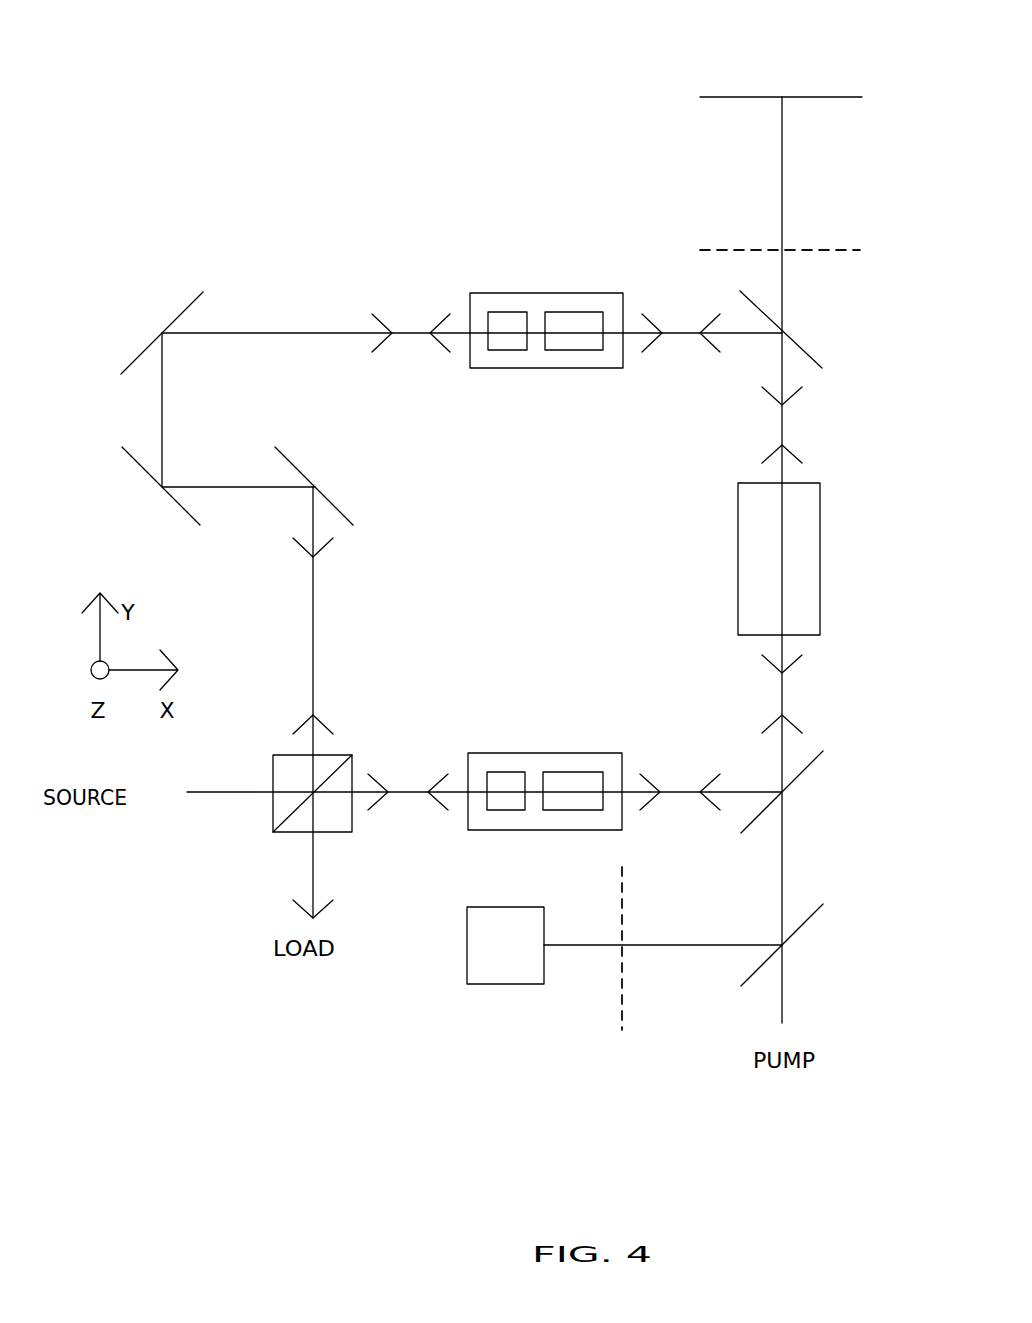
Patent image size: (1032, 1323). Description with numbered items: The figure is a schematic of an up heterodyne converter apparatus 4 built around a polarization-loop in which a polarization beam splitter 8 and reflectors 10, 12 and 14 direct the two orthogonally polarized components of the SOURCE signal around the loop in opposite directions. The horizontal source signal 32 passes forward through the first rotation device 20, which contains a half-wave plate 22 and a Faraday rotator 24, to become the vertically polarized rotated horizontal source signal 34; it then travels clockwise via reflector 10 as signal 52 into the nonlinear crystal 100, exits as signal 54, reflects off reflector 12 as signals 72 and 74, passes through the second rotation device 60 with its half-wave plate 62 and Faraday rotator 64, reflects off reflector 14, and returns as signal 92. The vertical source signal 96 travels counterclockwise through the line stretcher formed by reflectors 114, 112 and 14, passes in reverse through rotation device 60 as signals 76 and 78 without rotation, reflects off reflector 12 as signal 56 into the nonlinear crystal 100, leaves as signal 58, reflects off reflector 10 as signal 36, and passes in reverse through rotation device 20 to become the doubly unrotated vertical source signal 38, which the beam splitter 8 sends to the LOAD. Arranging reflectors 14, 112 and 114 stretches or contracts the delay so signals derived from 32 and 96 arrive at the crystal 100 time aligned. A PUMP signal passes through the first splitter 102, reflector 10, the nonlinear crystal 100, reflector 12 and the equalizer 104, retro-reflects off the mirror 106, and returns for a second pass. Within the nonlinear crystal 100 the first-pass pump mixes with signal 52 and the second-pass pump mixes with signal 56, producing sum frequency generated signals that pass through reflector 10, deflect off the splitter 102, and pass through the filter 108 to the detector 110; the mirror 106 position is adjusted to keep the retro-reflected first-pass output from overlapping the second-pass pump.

The up heterodyne converter apparatus 4 is at (162, 198).
The polarization beam splitter 8 is at (312, 809).
The reflector 10 is at (794, 792).
The reflector 12 is at (794, 329).
The reflector 14 is at (162, 329).
The first rotation device 20 is at (478, 753).
The half-wave plate 22 is at (508, 772).
The Faraday rotator 24 is at (565, 772).
The horizontal source signal 32 is at (373, 809).
The rotated horizontal source signal 34 is at (646, 809).
The unrotated vertical source signal 36 is at (705, 809).
The doubly unrotated vertical source signal 38 is at (433, 809).
The vertically-polarized signal 52 is at (800, 725).
The vertically-polarized signal 54 is at (801, 455).
The vertically-polarized signal 56 is at (801, 397).
The vertically-polarized signal 58 is at (800, 665).
The rotation device 60 is at (478, 368).
The half-wave plate 62 is at (508, 350).
The Faraday rotator 64 is at (562, 350).
The vertically-polarized signal 72 is at (705, 316).
The vertically-polarized signal 74 is at (434, 317).
The vertically-polarized signal 76 is at (376, 317).
The vertically-polarized signal 78 is at (647, 316).
The rotated horizontal source signal 92 is at (299, 552).
The vertical source signal 96 is at (298, 727).
The nonlinear crystal 100 is at (820, 560).
The first splitter 102 is at (792, 945).
The equalizer 104 is at (850, 250).
The mirror 106 is at (711, 97).
The filter 108 is at (620, 878).
The detector 110 is at (467, 945).
The reflector 112 is at (161, 488).
The reflector 114 is at (314, 475).